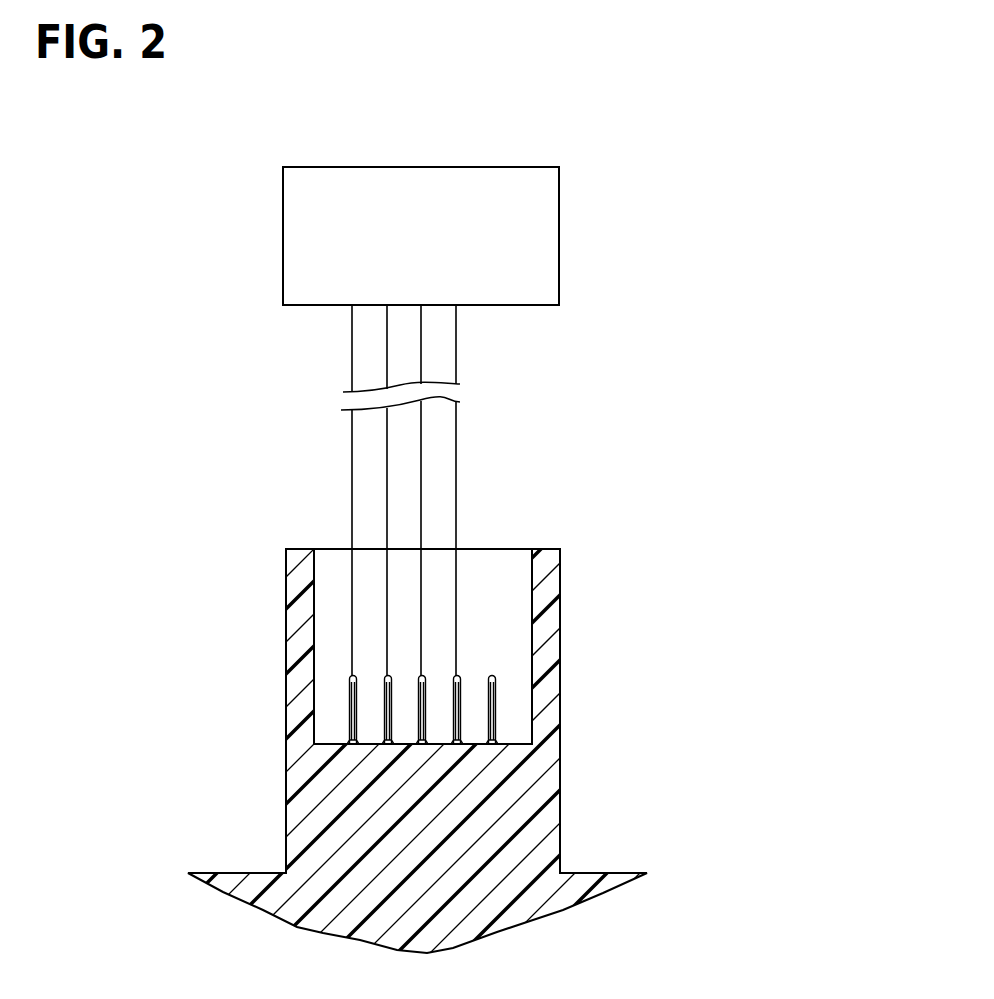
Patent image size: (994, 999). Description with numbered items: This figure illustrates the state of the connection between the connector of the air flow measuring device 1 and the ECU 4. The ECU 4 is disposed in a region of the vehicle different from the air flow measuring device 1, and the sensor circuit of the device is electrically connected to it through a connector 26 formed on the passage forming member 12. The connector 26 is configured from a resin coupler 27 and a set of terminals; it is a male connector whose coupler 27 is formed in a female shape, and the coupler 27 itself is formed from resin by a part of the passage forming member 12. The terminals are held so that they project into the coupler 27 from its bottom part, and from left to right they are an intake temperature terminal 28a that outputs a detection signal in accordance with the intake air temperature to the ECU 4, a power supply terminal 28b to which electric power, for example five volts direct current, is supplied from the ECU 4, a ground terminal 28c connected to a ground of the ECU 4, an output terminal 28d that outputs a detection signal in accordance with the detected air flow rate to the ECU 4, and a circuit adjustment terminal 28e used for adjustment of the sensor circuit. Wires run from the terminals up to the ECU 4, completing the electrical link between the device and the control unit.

The air flow measuring device 1 is at (497, 499).
The ECU 4 is at (559, 250).
The passage forming member 12 is at (306, 805).
The connector 26 is at (530, 599).
The coupler 27 is at (286, 572).
The intake temperature terminal 28a is at (349, 731).
The power supply terminal 28b is at (384, 710).
The ground terminal 28c is at (418, 693).
The output terminal 28d is at (461, 702).
The circuit adjustment terminal 28e is at (496, 724).